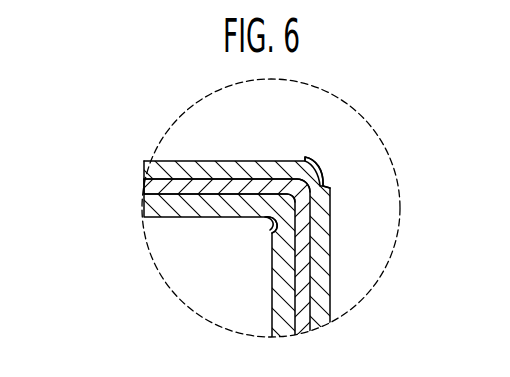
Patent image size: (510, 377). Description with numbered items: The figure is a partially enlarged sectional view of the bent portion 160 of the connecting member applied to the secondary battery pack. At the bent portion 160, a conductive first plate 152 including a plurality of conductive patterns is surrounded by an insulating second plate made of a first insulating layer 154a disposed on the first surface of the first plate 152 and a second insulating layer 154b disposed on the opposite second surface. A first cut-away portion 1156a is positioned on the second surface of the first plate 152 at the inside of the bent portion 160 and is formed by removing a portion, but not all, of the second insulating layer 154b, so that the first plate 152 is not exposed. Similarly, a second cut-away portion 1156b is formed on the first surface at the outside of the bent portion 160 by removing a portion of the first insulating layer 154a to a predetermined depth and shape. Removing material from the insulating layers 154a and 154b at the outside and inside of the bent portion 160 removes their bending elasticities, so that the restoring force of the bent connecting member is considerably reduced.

The bent portion 160 is at (368, 126).
The first plate 152 is at (147, 185).
The first insulating layer 154a is at (147, 172).
The second insulating layer 154b is at (147, 207).
The first cut-away portion 1156a is at (265, 227).
The second cut-away portion 1156b is at (318, 172).